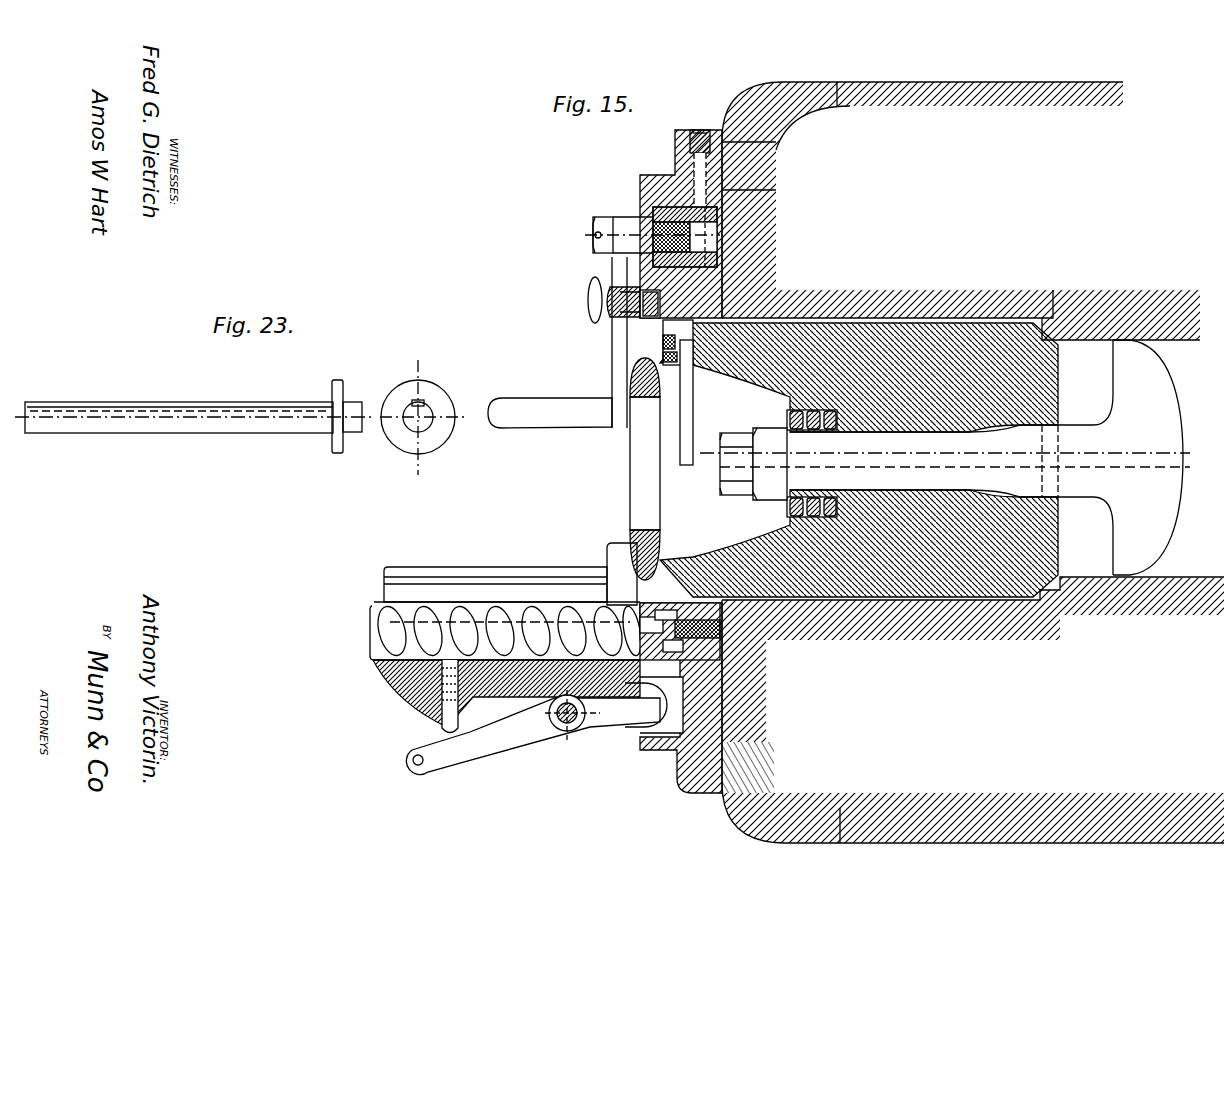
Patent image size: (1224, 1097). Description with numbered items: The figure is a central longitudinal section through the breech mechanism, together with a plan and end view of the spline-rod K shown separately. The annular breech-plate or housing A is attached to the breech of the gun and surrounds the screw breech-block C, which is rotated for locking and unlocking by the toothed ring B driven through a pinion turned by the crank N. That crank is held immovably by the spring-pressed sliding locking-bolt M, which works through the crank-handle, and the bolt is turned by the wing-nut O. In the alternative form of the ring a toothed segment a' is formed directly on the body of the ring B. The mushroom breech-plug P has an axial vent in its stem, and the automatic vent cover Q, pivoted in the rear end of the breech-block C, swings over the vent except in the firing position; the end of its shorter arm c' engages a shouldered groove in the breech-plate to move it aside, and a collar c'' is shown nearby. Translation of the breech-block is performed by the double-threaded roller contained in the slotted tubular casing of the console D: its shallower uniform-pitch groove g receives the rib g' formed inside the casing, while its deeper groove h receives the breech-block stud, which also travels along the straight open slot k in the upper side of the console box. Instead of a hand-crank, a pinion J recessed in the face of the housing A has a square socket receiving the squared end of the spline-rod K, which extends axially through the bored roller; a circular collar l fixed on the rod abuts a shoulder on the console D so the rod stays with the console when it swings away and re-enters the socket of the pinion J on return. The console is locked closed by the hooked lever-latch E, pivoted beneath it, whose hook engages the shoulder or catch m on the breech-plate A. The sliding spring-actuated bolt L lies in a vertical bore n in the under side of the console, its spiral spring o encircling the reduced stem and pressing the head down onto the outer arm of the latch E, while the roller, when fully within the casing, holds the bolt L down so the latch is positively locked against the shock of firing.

In FIG. 15, the annular breech-plate or housing A is at (673, 158).
In FIG. 15, the toothed ring B is at (742, 290).
In FIG. 15, the screw breech-block C is at (859, 460).
In FIG. 15, the console D is at (390, 571).
In FIG. 15, the lever-latch E is at (533, 736).
In FIG. 15, the pinion J is at (662, 582).
In FIG. 15, the spline-rod K is at (655, 640).
In FIG. 15, the spring-actuated locking bolt L is at (452, 731).
In FIG. 15, the locking-bolt M is at (610, 290).
In FIG. 15, the crank N is at (620, 212).
In FIG. 15, the wing-nut O is at (585, 300).
In FIG. 15, the mushroom breech-plug P is at (945, 457).
In FIG. 15, the vent cover or guard Q is at (703, 401).
In FIG. 15, the toothed segment a' is at (623, 319).
In FIG. 15, the shorter arm of vent-cover c' is at (695, 402).
In FIG. 15, the collar c'' is at (682, 342).
In FIG. 15, the shallower thread or groove g is at (508, 647).
In FIG. 15, the thread or rib g' is at (360, 665).
In FIG. 15, the deeper thread or groove h is at (526, 636).
In FIG. 15, the straight open slot k is at (500, 595).
In FIG. 23, the straight open slot k is at (456, 395).
In FIG. 15, the circular collar l is at (626, 578).
In FIG. 23, the circular collar l is at (343, 396).
In FIG. 15, the shoulder or catch m is at (646, 705).
In FIG. 15, the bore n is at (470, 697).
In FIG. 15, the spiral spring o is at (440, 706).